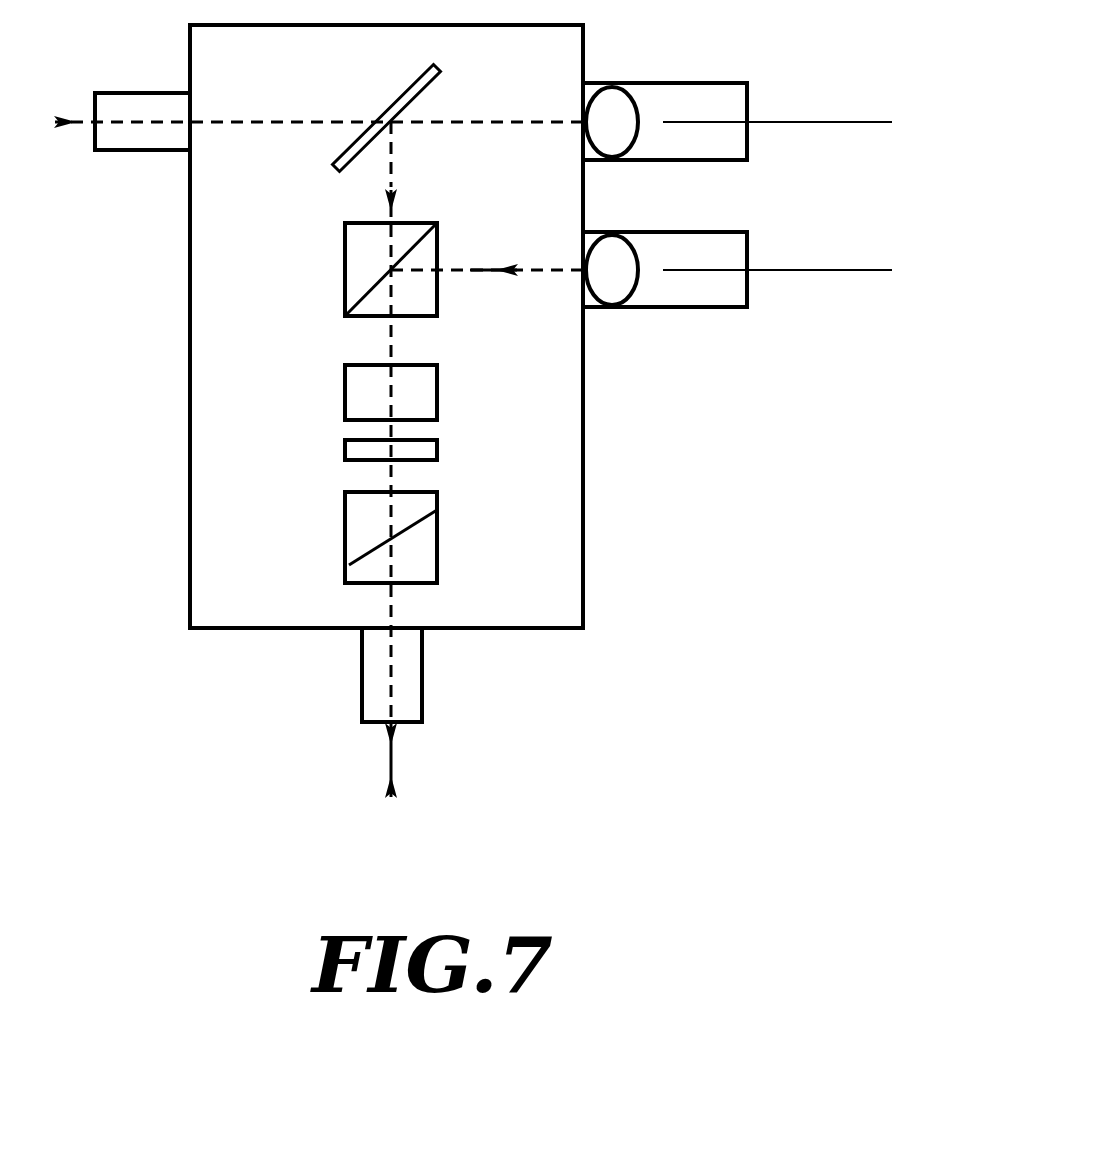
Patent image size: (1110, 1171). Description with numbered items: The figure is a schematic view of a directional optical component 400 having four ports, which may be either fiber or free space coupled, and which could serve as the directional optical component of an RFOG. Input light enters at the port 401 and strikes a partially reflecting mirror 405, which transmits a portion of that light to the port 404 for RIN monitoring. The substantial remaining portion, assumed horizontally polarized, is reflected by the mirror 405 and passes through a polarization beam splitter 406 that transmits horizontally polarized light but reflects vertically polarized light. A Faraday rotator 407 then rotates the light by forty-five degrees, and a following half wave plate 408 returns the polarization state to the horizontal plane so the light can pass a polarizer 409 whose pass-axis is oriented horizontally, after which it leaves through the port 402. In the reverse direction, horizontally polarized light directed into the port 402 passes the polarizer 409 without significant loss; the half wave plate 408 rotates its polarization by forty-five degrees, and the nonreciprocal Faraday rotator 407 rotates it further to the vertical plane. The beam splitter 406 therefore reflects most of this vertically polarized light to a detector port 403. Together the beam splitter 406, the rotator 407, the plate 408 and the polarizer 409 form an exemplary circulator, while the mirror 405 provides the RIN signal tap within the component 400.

The directional optical component 400 is at (583, 545).
The port 401 is at (708, 83).
The port 402 is at (362, 668).
The detector port 403 is at (708, 307).
The port 404 is at (140, 93).
The partially reflecting mirror 405 is at (388, 106).
The polarization beam splitter 406 is at (345, 270).
The Faraday rotator 407 is at (345, 392).
The half wave plate 408 is at (345, 450).
The polarizer 409 is at (345, 535).